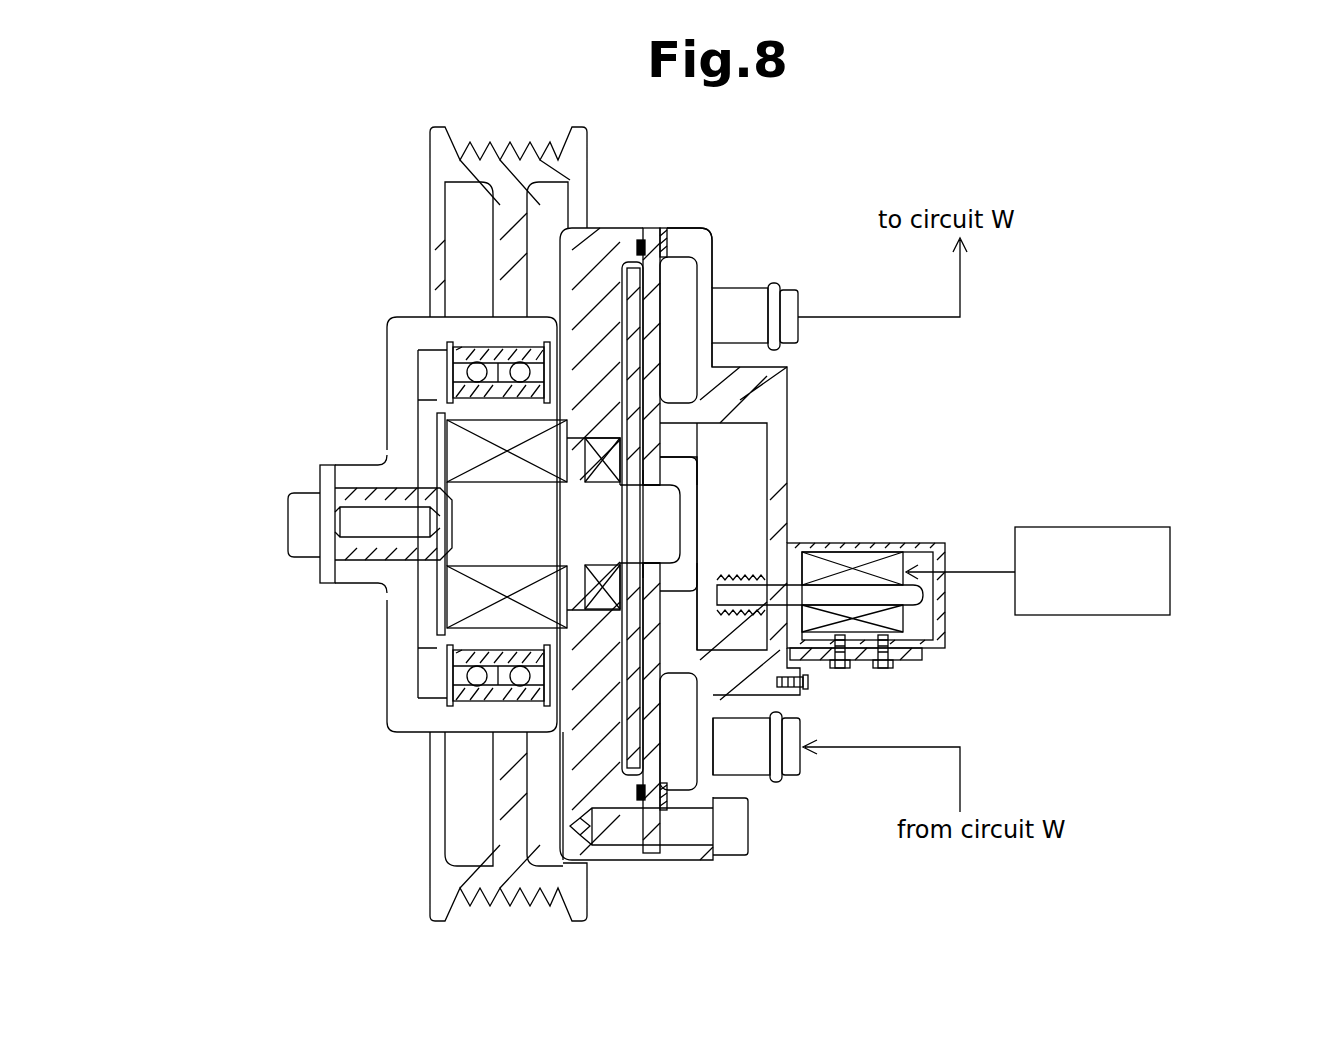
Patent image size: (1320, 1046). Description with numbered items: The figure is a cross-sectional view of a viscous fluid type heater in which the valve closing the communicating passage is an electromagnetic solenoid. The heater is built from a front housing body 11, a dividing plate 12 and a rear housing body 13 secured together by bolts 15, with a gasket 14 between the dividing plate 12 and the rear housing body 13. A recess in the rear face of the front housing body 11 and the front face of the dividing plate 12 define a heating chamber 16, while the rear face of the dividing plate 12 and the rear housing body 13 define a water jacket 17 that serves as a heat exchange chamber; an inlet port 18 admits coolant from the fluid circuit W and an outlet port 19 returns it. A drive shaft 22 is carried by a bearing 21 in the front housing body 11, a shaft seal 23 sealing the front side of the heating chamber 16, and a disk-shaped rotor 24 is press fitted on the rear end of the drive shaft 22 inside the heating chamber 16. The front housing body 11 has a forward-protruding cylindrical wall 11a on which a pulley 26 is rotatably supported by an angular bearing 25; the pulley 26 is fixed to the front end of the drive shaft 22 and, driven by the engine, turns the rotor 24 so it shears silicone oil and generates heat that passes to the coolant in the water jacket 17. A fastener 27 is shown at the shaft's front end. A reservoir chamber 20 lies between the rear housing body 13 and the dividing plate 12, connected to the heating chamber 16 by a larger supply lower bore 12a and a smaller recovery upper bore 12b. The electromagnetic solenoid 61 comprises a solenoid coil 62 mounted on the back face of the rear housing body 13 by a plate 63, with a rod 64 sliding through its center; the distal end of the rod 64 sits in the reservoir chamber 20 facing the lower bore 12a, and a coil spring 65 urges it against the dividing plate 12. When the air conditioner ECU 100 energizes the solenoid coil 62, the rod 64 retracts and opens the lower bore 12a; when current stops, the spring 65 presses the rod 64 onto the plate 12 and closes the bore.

The front housing body 11 is at (610, 242).
The cylindrical wall 11a is at (435, 380).
The dividing plate 12 is at (655, 235).
The supply lower bore 12a is at (625, 548).
The recovery upper bore 12b is at (625, 500).
The rear housing body 13 is at (716, 242).
The gasket 14 is at (668, 238).
The bolt 15 is at (736, 832).
The heating chamber 16 is at (645, 238).
The water jacket 17 is at (690, 285).
The inlet port 18 is at (795, 768).
The outlet port 19 is at (790, 298).
The reservoir chamber 20 is at (744, 478).
The bearing 21 is at (455, 452).
The drive shaft 22 is at (355, 490).
The shaft seal 23 is at (600, 438).
The rotor 24 is at (627, 292).
The angular bearing 25 is at (455, 335).
The pulley 26 is at (440, 180).
The bolt 27 is at (300, 495).
The electromagnetic solenoid 61 is at (910, 528).
The solenoid coil 62 is at (848, 560).
The plate 63 is at (915, 660).
The rod 64 is at (742, 606).
The coil spring 65 is at (735, 577).
The air conditioner ECU 100 is at (1170, 570).